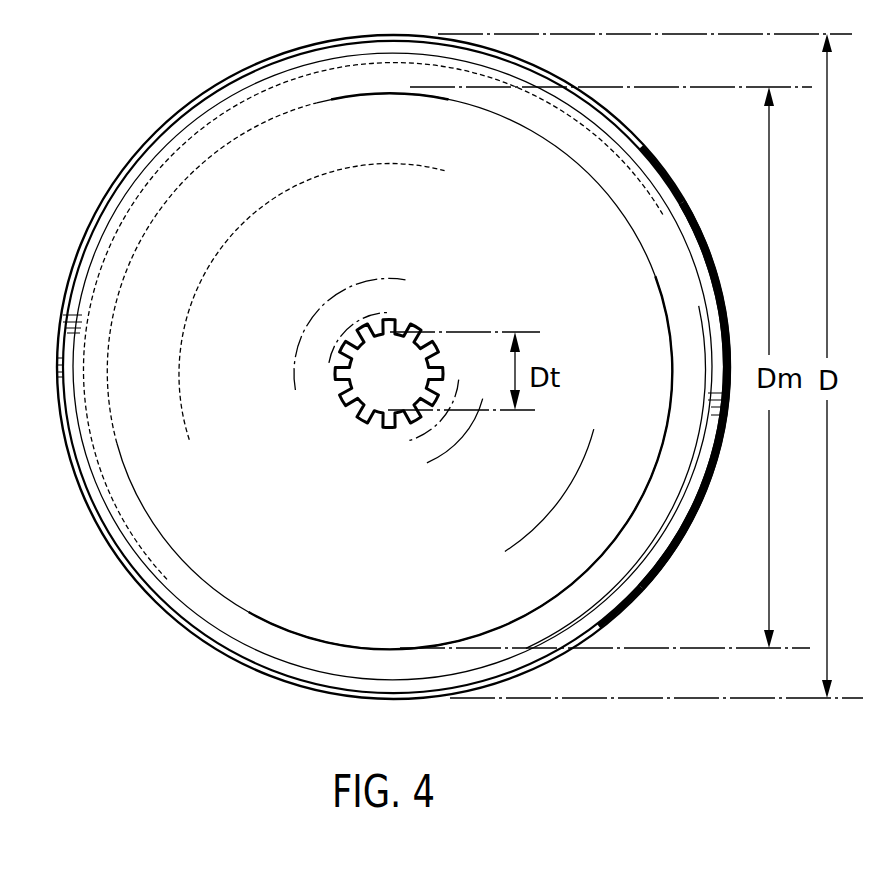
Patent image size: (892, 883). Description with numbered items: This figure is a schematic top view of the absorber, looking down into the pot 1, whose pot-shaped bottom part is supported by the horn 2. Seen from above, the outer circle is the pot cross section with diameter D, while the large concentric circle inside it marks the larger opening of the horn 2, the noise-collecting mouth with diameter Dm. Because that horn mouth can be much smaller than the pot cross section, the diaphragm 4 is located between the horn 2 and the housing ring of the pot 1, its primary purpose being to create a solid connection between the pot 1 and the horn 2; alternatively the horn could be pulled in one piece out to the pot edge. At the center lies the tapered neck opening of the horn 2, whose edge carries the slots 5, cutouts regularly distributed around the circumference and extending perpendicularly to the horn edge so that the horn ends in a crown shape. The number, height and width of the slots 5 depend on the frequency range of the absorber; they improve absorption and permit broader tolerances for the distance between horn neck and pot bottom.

The pot 1 is at (100, 523).
The horn 2 is at (175, 290).
The diaphragm 4 is at (128, 184).
The slot 5 is at (338, 376).